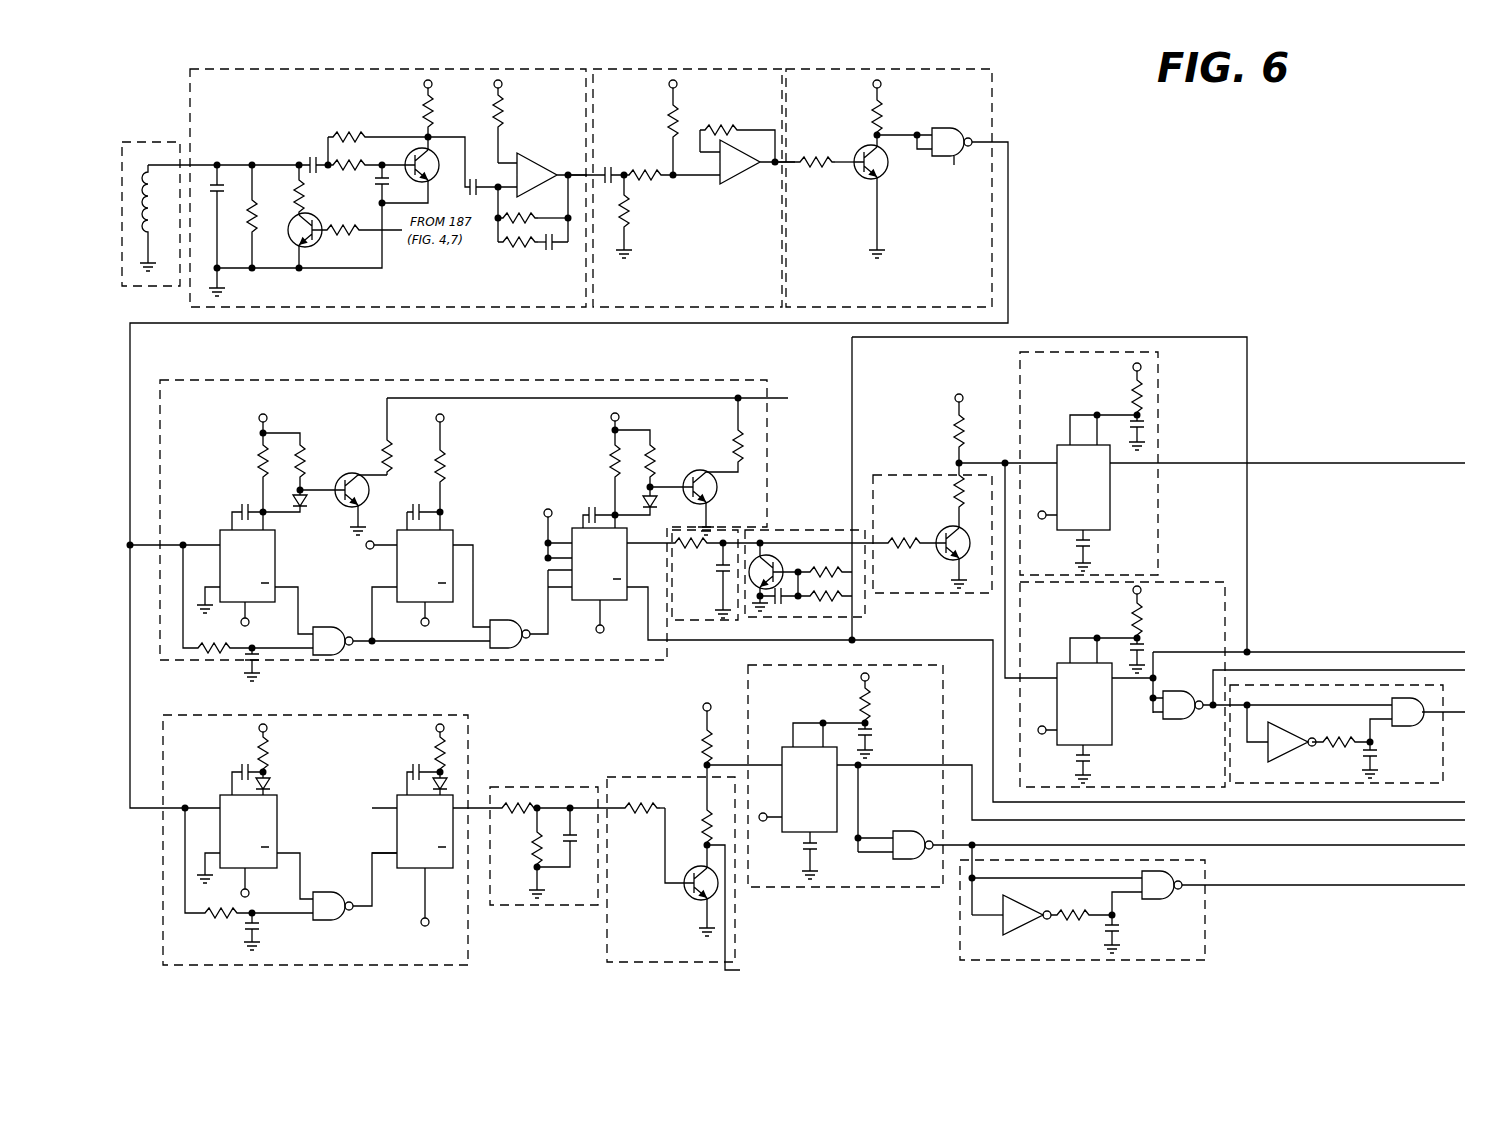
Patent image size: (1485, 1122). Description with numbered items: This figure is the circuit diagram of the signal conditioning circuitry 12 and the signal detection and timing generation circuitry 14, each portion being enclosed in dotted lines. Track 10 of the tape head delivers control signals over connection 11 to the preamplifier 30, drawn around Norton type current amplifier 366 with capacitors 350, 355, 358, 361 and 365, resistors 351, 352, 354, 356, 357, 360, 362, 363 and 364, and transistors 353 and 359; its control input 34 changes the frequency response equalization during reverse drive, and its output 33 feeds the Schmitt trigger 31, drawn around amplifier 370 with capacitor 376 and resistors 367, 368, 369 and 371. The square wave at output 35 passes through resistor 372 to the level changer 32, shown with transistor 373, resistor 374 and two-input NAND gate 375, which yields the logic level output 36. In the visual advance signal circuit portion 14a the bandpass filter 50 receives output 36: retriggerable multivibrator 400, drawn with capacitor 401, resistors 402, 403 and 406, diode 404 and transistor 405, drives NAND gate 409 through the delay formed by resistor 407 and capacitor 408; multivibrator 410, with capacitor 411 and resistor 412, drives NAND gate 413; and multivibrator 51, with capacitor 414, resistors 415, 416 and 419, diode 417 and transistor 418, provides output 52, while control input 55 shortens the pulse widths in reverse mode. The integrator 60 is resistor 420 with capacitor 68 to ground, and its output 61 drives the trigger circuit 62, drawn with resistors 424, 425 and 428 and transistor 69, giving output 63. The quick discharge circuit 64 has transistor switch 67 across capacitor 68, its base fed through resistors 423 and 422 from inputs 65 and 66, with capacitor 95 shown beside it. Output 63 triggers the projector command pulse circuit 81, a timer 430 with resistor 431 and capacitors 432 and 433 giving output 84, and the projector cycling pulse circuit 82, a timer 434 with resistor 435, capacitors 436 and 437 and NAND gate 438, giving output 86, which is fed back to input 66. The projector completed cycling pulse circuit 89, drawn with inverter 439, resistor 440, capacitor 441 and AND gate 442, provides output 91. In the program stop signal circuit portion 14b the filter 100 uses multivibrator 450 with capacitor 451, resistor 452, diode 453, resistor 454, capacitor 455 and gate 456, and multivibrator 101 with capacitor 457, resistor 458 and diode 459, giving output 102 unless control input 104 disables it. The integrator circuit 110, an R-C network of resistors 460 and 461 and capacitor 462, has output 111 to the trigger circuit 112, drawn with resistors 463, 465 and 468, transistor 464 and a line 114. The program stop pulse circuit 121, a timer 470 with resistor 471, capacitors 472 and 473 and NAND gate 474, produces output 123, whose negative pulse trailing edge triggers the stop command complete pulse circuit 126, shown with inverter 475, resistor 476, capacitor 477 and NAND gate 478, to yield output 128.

The track of tape head 10 is at (136, 141).
The connection 11 is at (188, 165).
The signal conditioning circuitry 12 is at (643, 63).
The signal detection and timing generation circuitry 14 is at (578, 722).
The visual advance signal circuit portion 14a is at (534, 668).
The program stop signal circuit portion 14b is at (517, 763).
The preamplifier 30 is at (332, 68).
The Schmitt trigger 31 is at (737, 68).
The signal level changer 32 is at (996, 90).
The preamplifier output 33 is at (593, 165).
The control input 34 is at (393, 232).
The Schmitt trigger output 35 is at (789, 162).
The output of signal conditioning circuitry 36 is at (1009, 168).
The digital pulse width discriminating bandpass filter 50 is at (510, 380).
The retriggerable multivibrator 51 is at (608, 630).
The filter output 52 is at (1451, 802).
The control input of filter 55 is at (756, 396).
The integrator 60 is at (706, 622).
The integrator output 61 is at (742, 548).
The trigger circuit 62 is at (918, 475).
The trigger circuit output 63 is at (968, 460).
The quick discharge circuit 64 is at (796, 532).
The input of quick discharge circuit 65 is at (866, 618).
The input of quick discharge circuit 66 is at (856, 449).
The transistor switch 67 is at (784, 561).
The capacitor 68 is at (716, 575).
The transistor 69 is at (945, 557).
The projector command pulse circuit 81 is at (1160, 420).
The projector cycling pulse circuit 82 is at (1202, 582).
The output of projector command pulse circuit 84 is at (1450, 456).
The output of projector cycling pulse circuit 86 is at (1453, 651).
The projector completed cycling pulse circuit 89 is at (1446, 760).
The output of projector completed cycling pulse circuit 91 is at (1466, 714).
The capacitor 95 is at (784, 601).
The digital pulse width discriminating bandpass filter 100 is at (357, 715).
The retriggerable multivibrator 101 is at (393, 826).
The filter output 102 is at (477, 808).
The control input of filter 104 is at (372, 807).
The integrator circuit 110 is at (567, 787).
The integrator output 111 is at (600, 790).
The trigger circuit 112 is at (740, 945).
The output line 114 is at (735, 971).
The program stop pulse circuit 121 is at (944, 702).
The output of program stop pulse circuit 123 is at (970, 762).
The stop command complete pulse circuit 126 is at (1207, 923).
The output of stop command complete pulse circuit 128 is at (1446, 888).
The capacitor 350 is at (226, 200).
The resistor 351 is at (257, 200).
The resistor 352 is at (303, 196).
The transistor 353 is at (322, 251).
The resistor 354 is at (346, 234).
The capacitor 355 is at (306, 158).
The resistor 356 is at (345, 132).
The resistor 357 is at (350, 160).
The capacitor 358 is at (378, 190).
The transistor 359 is at (439, 174).
The resistor 360 is at (434, 112).
The capacitor 361 is at (468, 191).
The resistor 362 is at (503, 112).
The resistor 363 is at (525, 213).
The resistor 364 is at (512, 252).
The capacitor 365 is at (553, 252).
The Norton type current amplifier 366 is at (535, 157).
The resistor 367 is at (648, 182).
The resistor 368 is at (631, 214).
The resistor 369 is at (677, 130).
The Norton type current amplifier 370 is at (740, 178).
The resistor 371 is at (728, 121).
The resistor 372 is at (812, 171).
The transistor 373 is at (883, 176).
The resistor 374 is at (885, 118).
The two-input NAND gate 375 is at (924, 160).
The capacitor 376 is at (609, 168).
The retriggerable multivibrator 400 is at (277, 568).
The capacitor 401 is at (241, 505).
The resistor 402 is at (258, 455).
The resistor 403 is at (304, 450).
The diode 404 is at (303, 516).
The transistor 405 is at (352, 472).
The resistor 406 is at (389, 452).
The resistor 407 is at (226, 656).
The capacitor 408 is at (246, 674).
The NAND gate 409 is at (332, 628).
The retriggerable multivibrator 410 is at (455, 536).
The capacitor 411 is at (428, 495).
The resistor 412 is at (446, 455).
The NAND gate 413 is at (505, 617).
The capacitor 414 is at (590, 506).
The resistor 415 is at (611, 455).
The resistor 416 is at (655, 460).
The diode 417 is at (653, 511).
The transistor 418 is at (714, 468).
The resistor 419 is at (738, 440).
The resistor 420 is at (698, 549).
The resistor 422 is at (820, 566).
The resistor 423 is at (825, 488).
The resistor 424 is at (918, 535).
The resistor 425 is at (952, 492).
The resistor 428 is at (952, 427).
The timer 430 is at (1110, 490).
The resistor 431 is at (1130, 395).
The capacitor 432 is at (1146, 428).
The capacitor 433 is at (1090, 548).
The timer 434 is at (1112, 740).
The resistor 435 is at (1142, 618).
The capacitor 436 is at (1144, 645).
The capacitor 437 is at (1090, 762).
The two-input NAND gate 438 is at (1180, 719).
The inverter 439 is at (1278, 754).
The resistor 440 is at (1336, 736).
The capacitor 441 is at (1376, 757).
The two-input AND gate 442 is at (1417, 722).
The retriggerable multivibrator 450 is at (279, 814).
The capacitor 451 is at (240, 767).
The resistor 452 is at (270, 756).
The diode 453 is at (272, 783).
The resistor 454 is at (245, 877).
The capacitor 455 is at (259, 934).
The gate 456 is at (331, 920).
The capacitor 457 is at (418, 768).
The resistor 458 is at (432, 748).
The diode 459 is at (455, 788).
The resistor 460 is at (536, 821).
The resistor 461 is at (533, 852).
The capacitor 462 is at (576, 852).
The resistor 463 is at (642, 823).
The transistor 464 is at (686, 896).
The resistor 465 is at (707, 820).
The resistor 468 is at (706, 736).
The timer 470 is at (792, 835).
The resistor 471 is at (872, 705).
The capacitor 472 is at (874, 733).
The capacitor 473 is at (820, 862).
The two-input NAND gate 474 is at (902, 831).
The inverter 475 is at (1026, 927).
The resistor 476 is at (1071, 910).
The capacitor 477 is at (1120, 937).
The two-input NAND gate 478 is at (1168, 900).